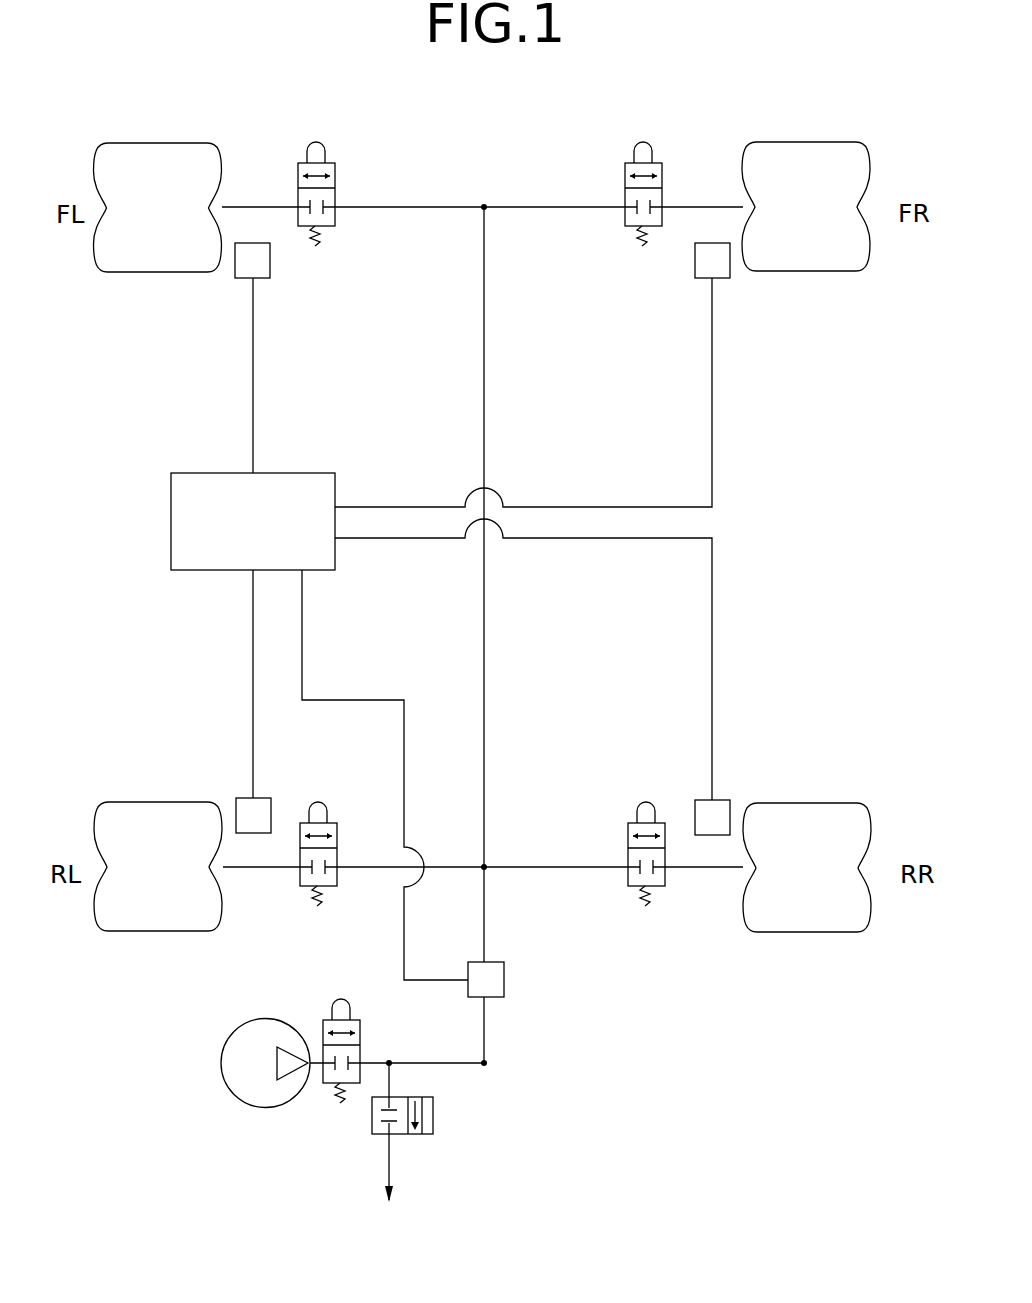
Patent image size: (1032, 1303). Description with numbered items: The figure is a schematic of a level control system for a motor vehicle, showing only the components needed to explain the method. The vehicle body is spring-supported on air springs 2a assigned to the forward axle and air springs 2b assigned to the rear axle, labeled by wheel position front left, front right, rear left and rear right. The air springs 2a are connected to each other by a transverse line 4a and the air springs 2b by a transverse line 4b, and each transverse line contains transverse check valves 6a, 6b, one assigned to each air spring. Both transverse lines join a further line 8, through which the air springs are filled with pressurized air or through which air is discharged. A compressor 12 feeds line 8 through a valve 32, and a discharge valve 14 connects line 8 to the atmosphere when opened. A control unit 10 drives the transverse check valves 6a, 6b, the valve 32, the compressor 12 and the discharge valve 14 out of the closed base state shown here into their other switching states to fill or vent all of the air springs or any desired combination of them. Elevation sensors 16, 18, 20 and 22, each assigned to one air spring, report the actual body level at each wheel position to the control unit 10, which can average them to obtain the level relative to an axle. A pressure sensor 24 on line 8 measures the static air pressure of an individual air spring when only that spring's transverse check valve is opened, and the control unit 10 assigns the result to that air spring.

The air spring 2a is at (127, 262).
The air spring 2b is at (150, 920).
The transverse line 4a is at (508, 207).
The transverse line 4b is at (540, 867).
The transverse check valve 6a is at (323, 152).
The transverse check valve 6b is at (303, 887).
The line 8 is at (487, 1037).
The control unit 10 is at (180, 552).
The compressor 12 is at (235, 1080).
The discharge valve 14 is at (412, 1134).
The elevation sensor 16 is at (270, 273).
The elevation sensor 18 is at (695, 270).
The elevation sensor 20 is at (700, 798).
The elevation sensor 22 is at (272, 815).
The pressure sensor 24 is at (505, 975).
The valve 32 is at (362, 1052).